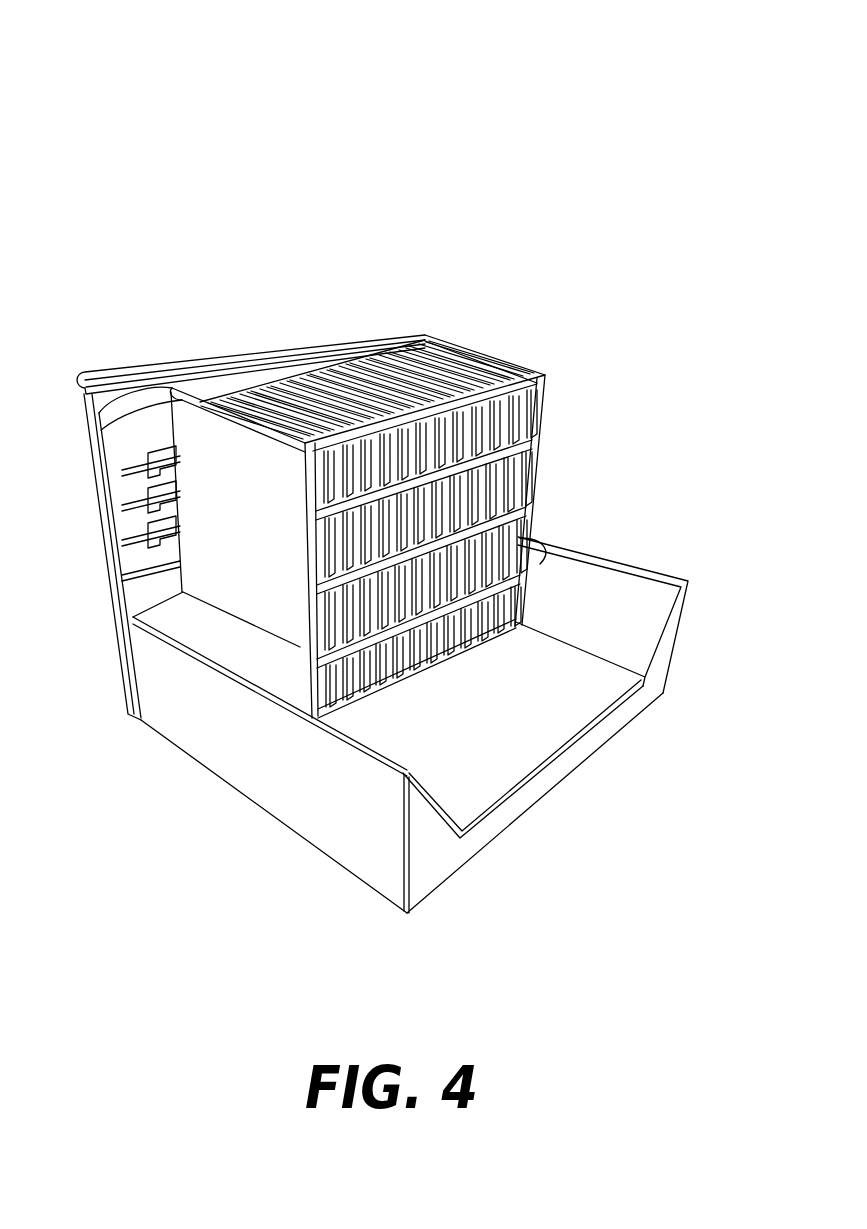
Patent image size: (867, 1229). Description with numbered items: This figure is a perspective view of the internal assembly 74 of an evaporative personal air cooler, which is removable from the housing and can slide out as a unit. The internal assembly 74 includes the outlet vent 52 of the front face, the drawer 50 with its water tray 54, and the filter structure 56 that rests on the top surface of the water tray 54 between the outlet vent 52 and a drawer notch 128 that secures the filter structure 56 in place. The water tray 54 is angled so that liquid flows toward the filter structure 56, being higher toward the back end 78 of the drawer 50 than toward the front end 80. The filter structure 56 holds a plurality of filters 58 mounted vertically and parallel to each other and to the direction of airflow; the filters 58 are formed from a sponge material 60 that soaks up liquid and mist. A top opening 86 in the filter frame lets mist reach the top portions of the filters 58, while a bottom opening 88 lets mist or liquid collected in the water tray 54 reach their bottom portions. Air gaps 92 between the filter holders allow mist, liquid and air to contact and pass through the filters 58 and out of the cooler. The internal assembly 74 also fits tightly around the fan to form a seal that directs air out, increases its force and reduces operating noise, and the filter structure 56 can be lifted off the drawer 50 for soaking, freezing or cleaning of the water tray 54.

The internal assembly 74 is at (57, 145).
The outlet vent 52 is at (150, 362).
The top opening 86 is at (282, 383).
The filters 58 is at (367, 341).
The sponge material 60 is at (394, 352).
The filter structure 56 is at (363, 566).
The drawer notch 128 is at (535, 558).
The drawer 50 is at (373, 695).
The front end 80 is at (200, 655).
The water tray 54 is at (565, 712).
The back end 78 is at (475, 778).
The air gaps 92 is at (356, 548).
The bottom opening 88 is at (337, 688).